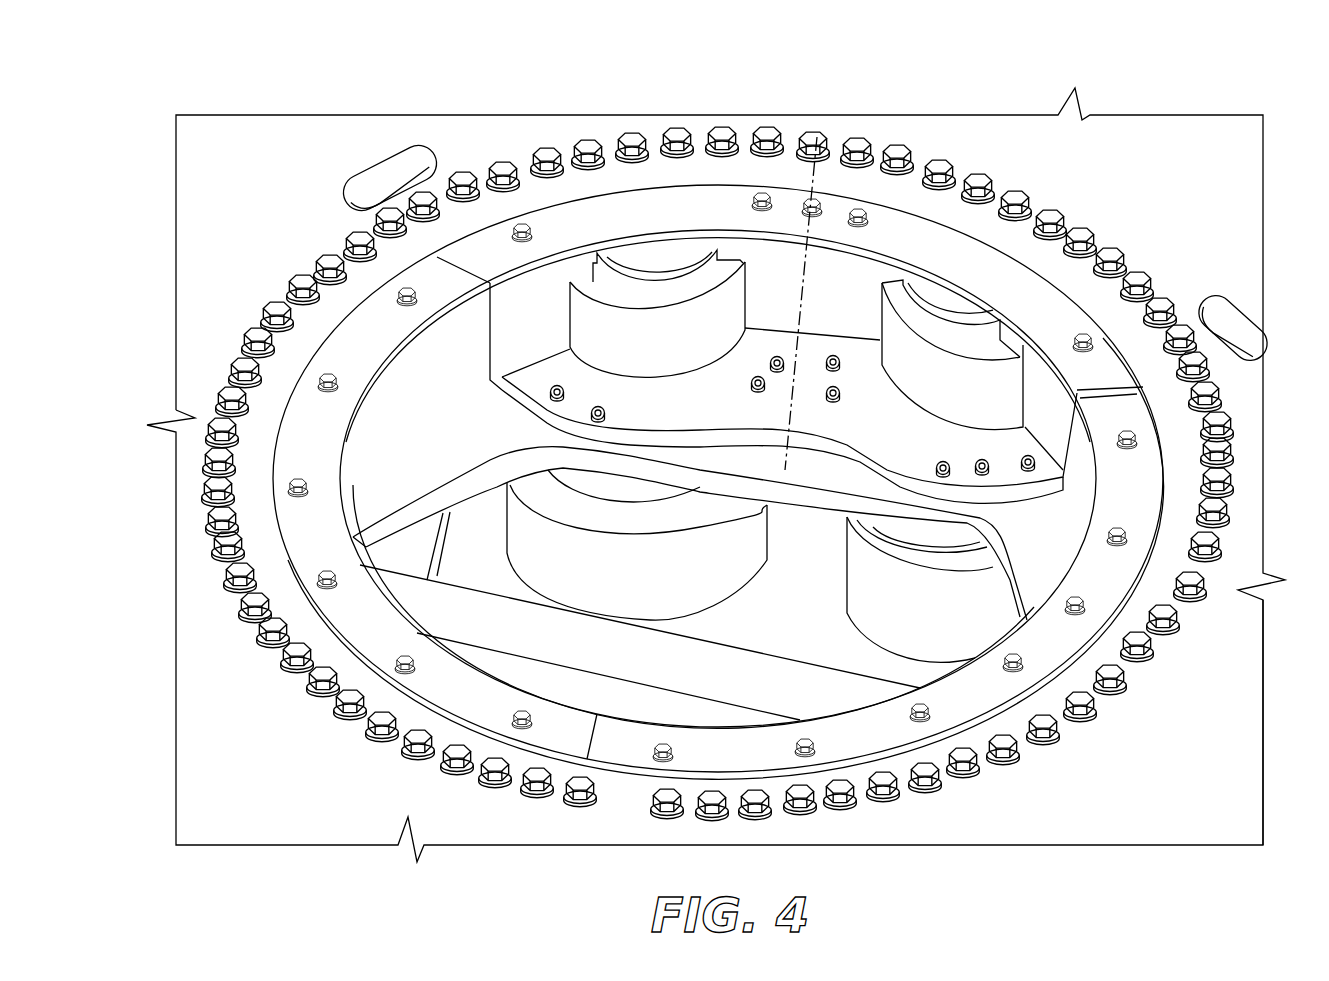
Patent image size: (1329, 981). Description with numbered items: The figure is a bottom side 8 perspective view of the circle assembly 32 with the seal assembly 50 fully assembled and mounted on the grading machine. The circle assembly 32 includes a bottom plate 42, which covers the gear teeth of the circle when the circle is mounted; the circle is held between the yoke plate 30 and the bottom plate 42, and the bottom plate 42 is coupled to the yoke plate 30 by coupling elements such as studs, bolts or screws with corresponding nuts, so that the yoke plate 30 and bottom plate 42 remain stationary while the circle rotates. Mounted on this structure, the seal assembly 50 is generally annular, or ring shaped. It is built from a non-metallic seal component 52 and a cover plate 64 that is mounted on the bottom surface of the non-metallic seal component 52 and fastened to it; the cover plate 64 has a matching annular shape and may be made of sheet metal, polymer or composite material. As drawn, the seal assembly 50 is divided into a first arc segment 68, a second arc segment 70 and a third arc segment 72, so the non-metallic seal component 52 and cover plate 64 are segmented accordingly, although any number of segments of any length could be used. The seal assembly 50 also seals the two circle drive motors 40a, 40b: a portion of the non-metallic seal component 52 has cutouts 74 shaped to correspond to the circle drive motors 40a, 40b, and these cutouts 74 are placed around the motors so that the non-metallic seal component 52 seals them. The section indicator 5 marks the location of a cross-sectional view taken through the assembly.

The bottom side 8 is at (764, 84).
The circle assembly 32 is at (442, 97).
The bottom plate 42 is at (1233, 700).
The seal assembly 50 is at (1109, 226).
The third arc segment 72 is at (313, 560).
The cover plate 64 is at (295, 435).
The first arc segment 68 is at (838, 218).
The second arc segment 70 is at (973, 693).
The non-metallic seal component 52 is at (543, 300).
The yoke plate 30 is at (1053, 553).
The circle drive motor 40a is at (615, 282).
The circle drive motor 40b is at (993, 340).
The cutouts 74 is at (667, 262).
The section line 5 is at (817, 137).